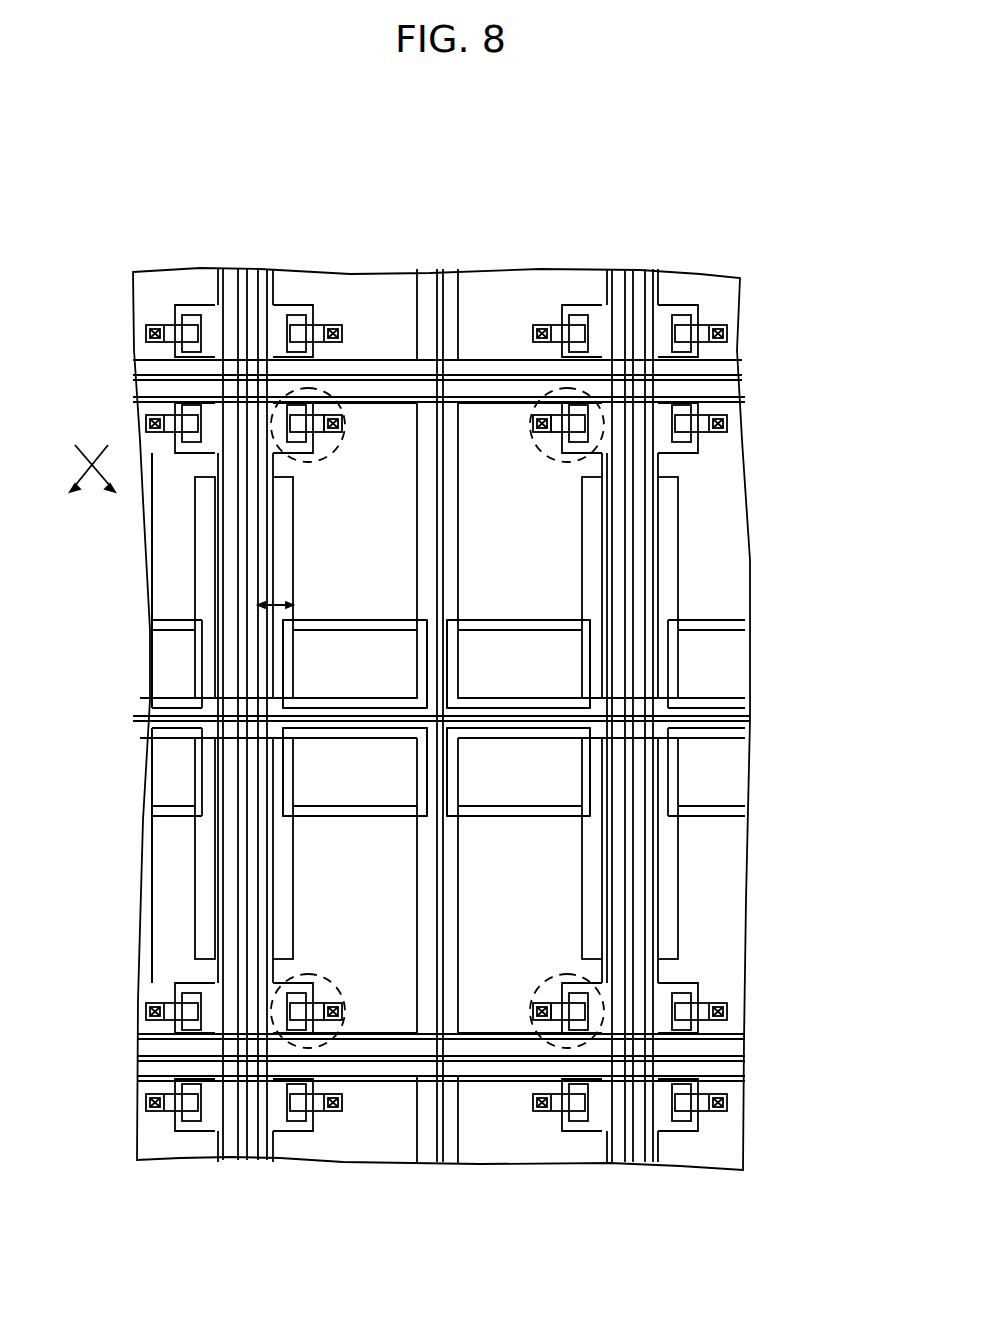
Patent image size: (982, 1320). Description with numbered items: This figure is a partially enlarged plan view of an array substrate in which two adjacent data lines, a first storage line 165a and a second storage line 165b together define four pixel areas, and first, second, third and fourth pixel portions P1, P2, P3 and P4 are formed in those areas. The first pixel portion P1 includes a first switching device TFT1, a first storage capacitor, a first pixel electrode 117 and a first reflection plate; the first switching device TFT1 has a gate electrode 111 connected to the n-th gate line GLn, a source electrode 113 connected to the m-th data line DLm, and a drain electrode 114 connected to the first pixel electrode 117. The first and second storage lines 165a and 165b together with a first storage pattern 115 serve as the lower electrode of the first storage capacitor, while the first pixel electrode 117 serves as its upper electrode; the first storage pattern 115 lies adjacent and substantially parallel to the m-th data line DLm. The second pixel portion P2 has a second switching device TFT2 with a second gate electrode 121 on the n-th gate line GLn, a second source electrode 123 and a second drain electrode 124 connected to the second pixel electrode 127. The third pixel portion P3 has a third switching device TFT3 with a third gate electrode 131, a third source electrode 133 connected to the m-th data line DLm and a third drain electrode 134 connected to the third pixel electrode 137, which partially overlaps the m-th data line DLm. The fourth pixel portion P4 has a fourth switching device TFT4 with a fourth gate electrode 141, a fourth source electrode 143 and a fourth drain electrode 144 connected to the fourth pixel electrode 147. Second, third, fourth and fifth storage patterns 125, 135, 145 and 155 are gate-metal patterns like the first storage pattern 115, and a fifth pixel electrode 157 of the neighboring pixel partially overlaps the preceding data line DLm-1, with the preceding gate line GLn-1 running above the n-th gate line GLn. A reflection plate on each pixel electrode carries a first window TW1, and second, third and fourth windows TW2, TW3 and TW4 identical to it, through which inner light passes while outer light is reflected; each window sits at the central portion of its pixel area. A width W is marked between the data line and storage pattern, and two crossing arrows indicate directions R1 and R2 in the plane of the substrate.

The gate electrode 111 is at (320, 443).
The source electrode 113 is at (300, 458).
The drain electrode 114 is at (343, 423).
The first storage pattern 115 is at (293, 643).
The first pixel electrode 117 is at (368, 395).
The second gate electrode 121 is at (557, 443).
The second source electrode 123 is at (575, 458).
The second drain electrode 124 is at (535, 423).
The second storage pattern 125 is at (587, 643).
The second pixel electrode 127 is at (508, 395).
The third gate electrode 131 is at (320, 1000).
The third source electrode 133 is at (303, 983).
The third drain electrode 134 is at (343, 1012).
The third storage pattern 135 is at (293, 842).
The third pixel electrode 137 is at (375, 1040).
The fourth gate electrode 141 is at (556, 1000).
The fourth source electrode 143 is at (570, 983).
The fourth drain electrode 144 is at (535, 1012).
The fourth storage pattern 145 is at (582, 842).
The fourth pixel electrode 147 is at (508, 1040).
The fifth storage pattern 155 is at (195, 838).
The fifth pixel electrode 157 is at (152, 944).
The first storage line 165a is at (441, 268).
The second storage line 165b is at (750, 706).
The (m−1)-th data line DLm-1 is at (229, 268).
The m-th data line DLm is at (259, 268).
The gate line GLn-1 is at (140, 376).
The n-th gate line GLn is at (135, 399).
The first switching device TFT1 is at (318, 466).
The second switching device TFT2 is at (560, 466).
The third switching device TFT3 is at (318, 983).
The fourth switching device TFT4 is at (560, 983).
The first pixel portion P1 is at (361, 571).
The second pixel portion P2 is at (524, 571).
The third pixel portion P3 is at (356, 891).
The fourth pixel portion P4 is at (551, 891).
The first window TW1 is at (390, 618).
The second window TW2 is at (549, 618).
The third window TW3 is at (400, 818).
The fourth window TW4 is at (485, 818).
The width W is at (293, 603).
The first direction R1 is at (103, 483).
The second direction R2 is at (82, 483).